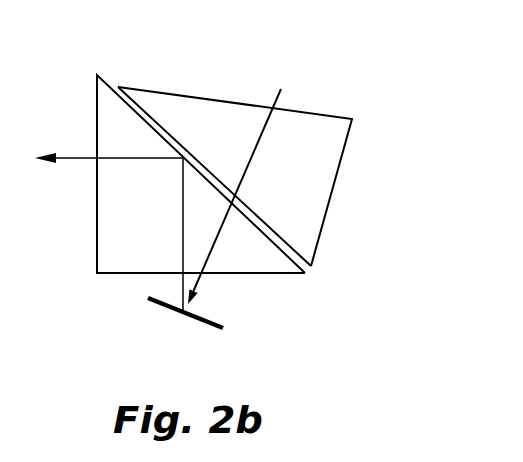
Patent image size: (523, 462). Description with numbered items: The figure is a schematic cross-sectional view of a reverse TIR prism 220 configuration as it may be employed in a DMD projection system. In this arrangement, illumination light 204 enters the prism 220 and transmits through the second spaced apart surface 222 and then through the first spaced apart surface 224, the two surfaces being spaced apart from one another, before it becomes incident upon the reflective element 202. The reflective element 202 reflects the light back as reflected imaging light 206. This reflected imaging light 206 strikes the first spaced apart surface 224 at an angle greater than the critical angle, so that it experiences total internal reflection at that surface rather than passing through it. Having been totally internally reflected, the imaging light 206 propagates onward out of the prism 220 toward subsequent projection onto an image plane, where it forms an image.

The reflective element 202 is at (202, 323).
The illumination light 204 is at (275, 100).
The reflected imaging light 206 is at (72, 157).
The reverse TIR prism 220 is at (313, 102).
The second spaced apart surface 222 is at (143, 107).
The first spaced apart surface 224 is at (108, 83).